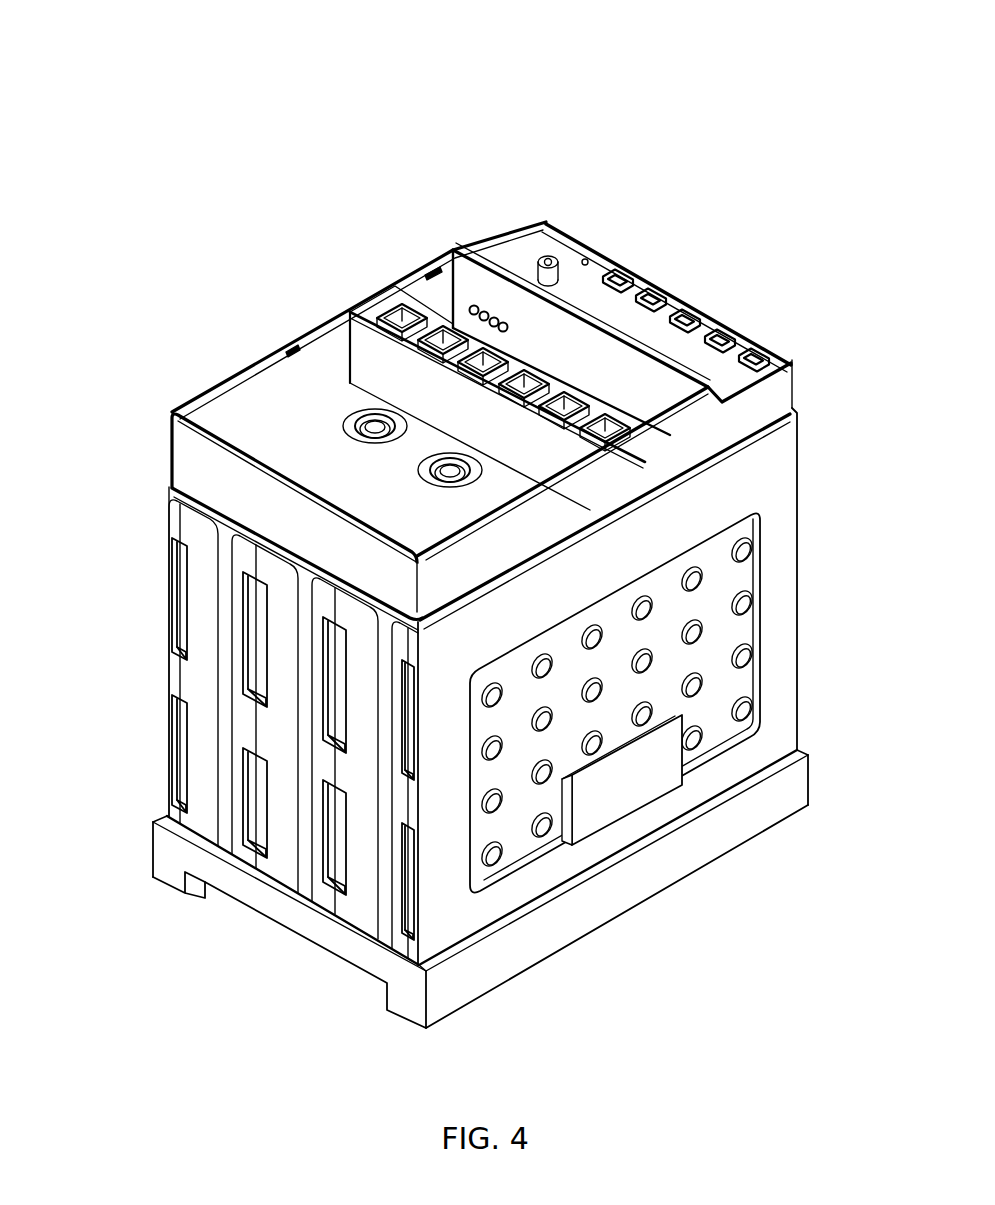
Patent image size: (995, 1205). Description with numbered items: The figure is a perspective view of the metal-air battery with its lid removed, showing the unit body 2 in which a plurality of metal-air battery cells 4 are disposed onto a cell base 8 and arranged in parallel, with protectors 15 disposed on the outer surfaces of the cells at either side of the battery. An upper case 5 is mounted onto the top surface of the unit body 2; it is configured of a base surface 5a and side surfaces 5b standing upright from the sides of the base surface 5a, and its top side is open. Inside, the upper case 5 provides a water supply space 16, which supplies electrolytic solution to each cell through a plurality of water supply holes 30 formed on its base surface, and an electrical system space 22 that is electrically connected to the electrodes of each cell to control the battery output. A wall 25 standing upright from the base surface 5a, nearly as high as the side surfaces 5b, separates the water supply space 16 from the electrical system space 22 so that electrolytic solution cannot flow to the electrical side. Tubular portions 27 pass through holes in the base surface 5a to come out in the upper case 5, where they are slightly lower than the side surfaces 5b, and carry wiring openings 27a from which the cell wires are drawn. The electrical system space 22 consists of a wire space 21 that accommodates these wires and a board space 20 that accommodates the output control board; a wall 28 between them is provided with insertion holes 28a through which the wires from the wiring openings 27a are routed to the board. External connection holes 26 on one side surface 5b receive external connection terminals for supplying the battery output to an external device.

The unit body 2 is at (132, 675).
The metal-air battery cell 4 is at (360, 917).
The upper case 5 is at (173, 450).
The base surface 5a is at (300, 430).
The side surface 5b is at (207, 397).
The cell base 8 is at (335, 942).
The protector 15 is at (553, 872).
The water supply space 16 is at (273, 450).
The board space 20 is at (545, 248).
The wire space 21 is at (470, 278).
The electrical system space 22 is at (437, 68).
The wall 25 is at (357, 312).
The external connection hole 26 is at (755, 358).
The tubular portion 27 is at (413, 310).
The wiring opening 27a is at (392, 320).
The wall 28 is at (568, 325).
The insertion hole 28a is at (487, 306).
The water supply hole 30 is at (450, 455).